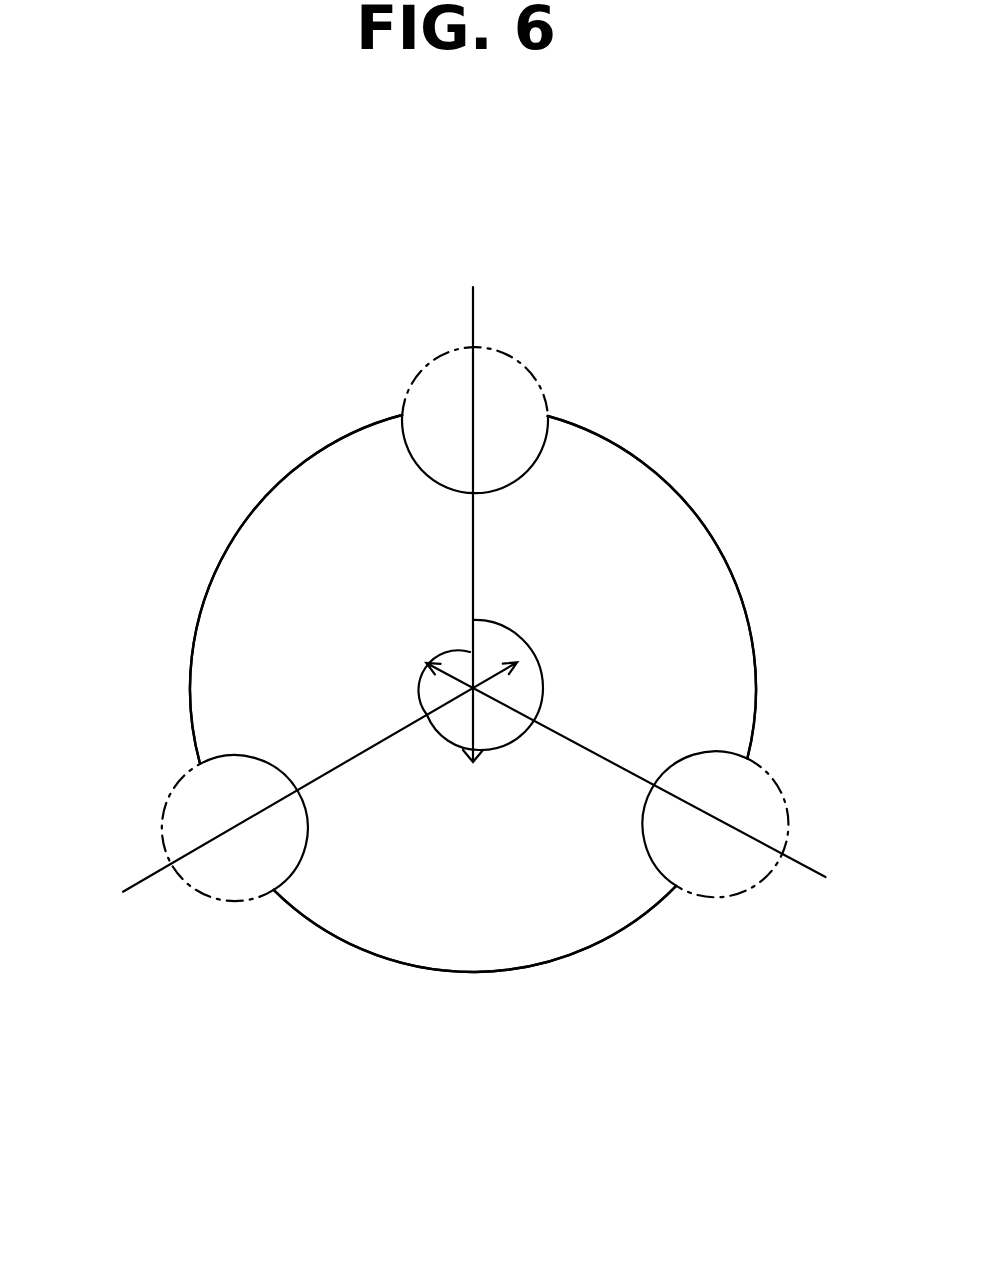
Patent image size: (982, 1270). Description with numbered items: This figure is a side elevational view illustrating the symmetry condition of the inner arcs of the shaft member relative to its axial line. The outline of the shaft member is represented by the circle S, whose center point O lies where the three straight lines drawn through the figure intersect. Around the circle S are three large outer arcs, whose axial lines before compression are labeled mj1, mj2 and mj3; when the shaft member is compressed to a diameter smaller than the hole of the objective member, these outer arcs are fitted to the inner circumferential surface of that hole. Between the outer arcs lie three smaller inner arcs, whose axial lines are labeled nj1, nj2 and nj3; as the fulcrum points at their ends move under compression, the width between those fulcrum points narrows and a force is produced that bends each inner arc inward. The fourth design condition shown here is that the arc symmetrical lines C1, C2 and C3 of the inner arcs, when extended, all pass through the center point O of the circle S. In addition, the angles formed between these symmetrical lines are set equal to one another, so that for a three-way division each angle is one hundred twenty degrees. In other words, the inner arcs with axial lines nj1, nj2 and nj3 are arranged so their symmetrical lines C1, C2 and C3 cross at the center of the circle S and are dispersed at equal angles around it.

The circle S is at (345, 438).
The center point of the circle O is at (473, 688).
The arc symmetrical line of the first inner arc C1 is at (527, 302).
The arc symmetrical line of the second inner arc C2 is at (787, 930).
The arc symmetrical line of the third inner arc C3 is at (152, 957).
The axial line of the first outer arc mj1 is at (759, 513).
The axial line of the second outer arc mj2 is at (468, 1043).
The axial line of the third outer arc mj3 is at (237, 533).
The axial line of the first inner arc nj1 is at (558, 508).
The axial line of the second inner arc nj2 is at (668, 763).
The axial line of the third inner arc nj3 is at (267, 745).